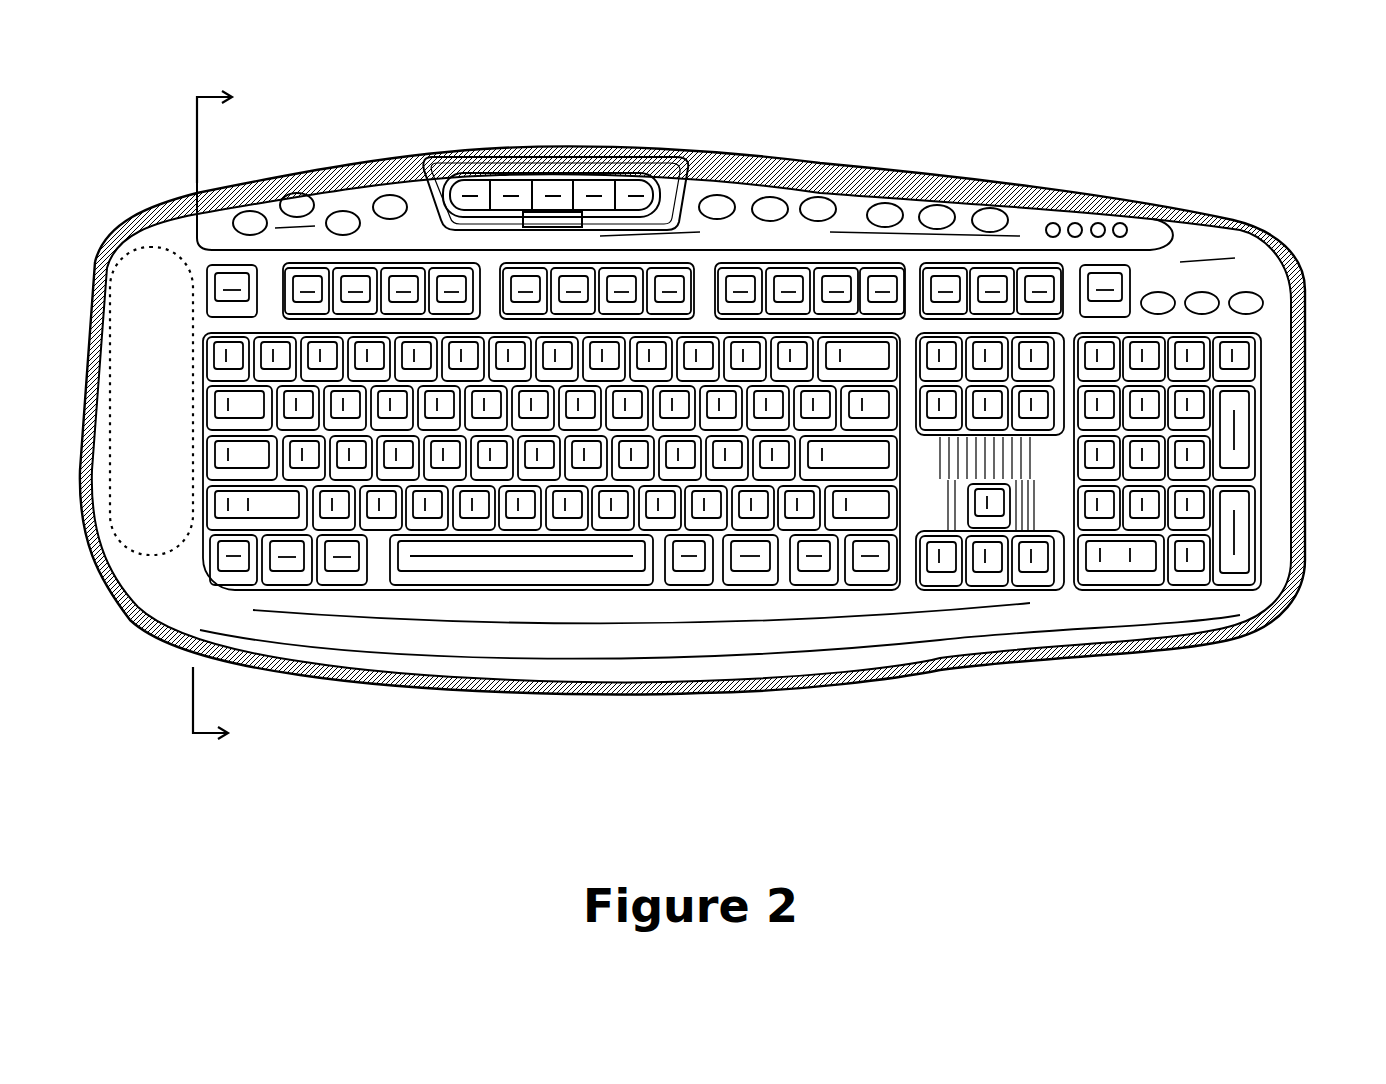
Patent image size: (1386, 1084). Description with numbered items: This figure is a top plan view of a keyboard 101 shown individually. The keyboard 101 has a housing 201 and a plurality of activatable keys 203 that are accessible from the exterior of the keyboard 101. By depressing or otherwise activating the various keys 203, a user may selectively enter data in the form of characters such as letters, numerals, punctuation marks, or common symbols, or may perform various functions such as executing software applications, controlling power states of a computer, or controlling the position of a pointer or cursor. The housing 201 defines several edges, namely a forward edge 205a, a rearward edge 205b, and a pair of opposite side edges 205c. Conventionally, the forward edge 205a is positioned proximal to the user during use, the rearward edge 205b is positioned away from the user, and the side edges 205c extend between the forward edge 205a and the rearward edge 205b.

The keyboard 101 is at (921, 138).
The housing 201 is at (1230, 615).
The activatable keys 203 is at (667, 287).
The forward edge 205a is at (700, 690).
The rearward edge 205b is at (632, 150).
The side edges 205c is at (1307, 420).